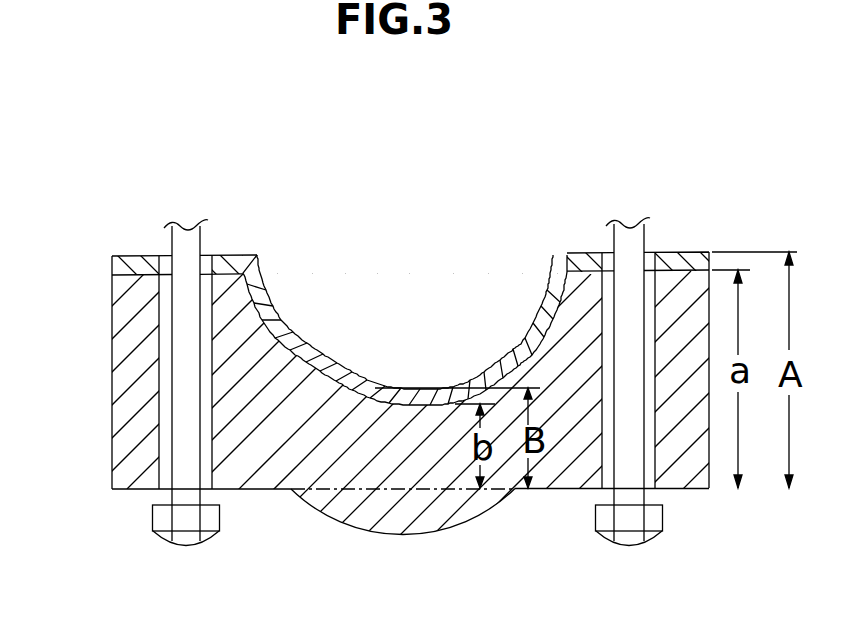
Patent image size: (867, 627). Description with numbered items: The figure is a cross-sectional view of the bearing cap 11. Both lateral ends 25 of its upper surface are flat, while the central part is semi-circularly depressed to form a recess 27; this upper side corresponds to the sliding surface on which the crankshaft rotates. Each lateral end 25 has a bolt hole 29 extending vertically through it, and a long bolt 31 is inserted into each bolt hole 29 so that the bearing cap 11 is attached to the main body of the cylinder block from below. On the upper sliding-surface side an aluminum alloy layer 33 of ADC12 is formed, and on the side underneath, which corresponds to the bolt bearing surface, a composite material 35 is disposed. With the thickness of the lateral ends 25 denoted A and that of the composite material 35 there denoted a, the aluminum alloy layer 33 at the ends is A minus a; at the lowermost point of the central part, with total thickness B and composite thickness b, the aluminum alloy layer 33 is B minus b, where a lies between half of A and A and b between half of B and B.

The bearing cap 11 is at (56, 96).
The lateral end 25 is at (680, 246).
The recess 27 is at (412, 369).
The bolt hole 29 is at (164, 312).
The bolt 31 is at (190, 432).
The aluminum alloy layer 33 is at (310, 350).
The composite material 35 is at (287, 448).